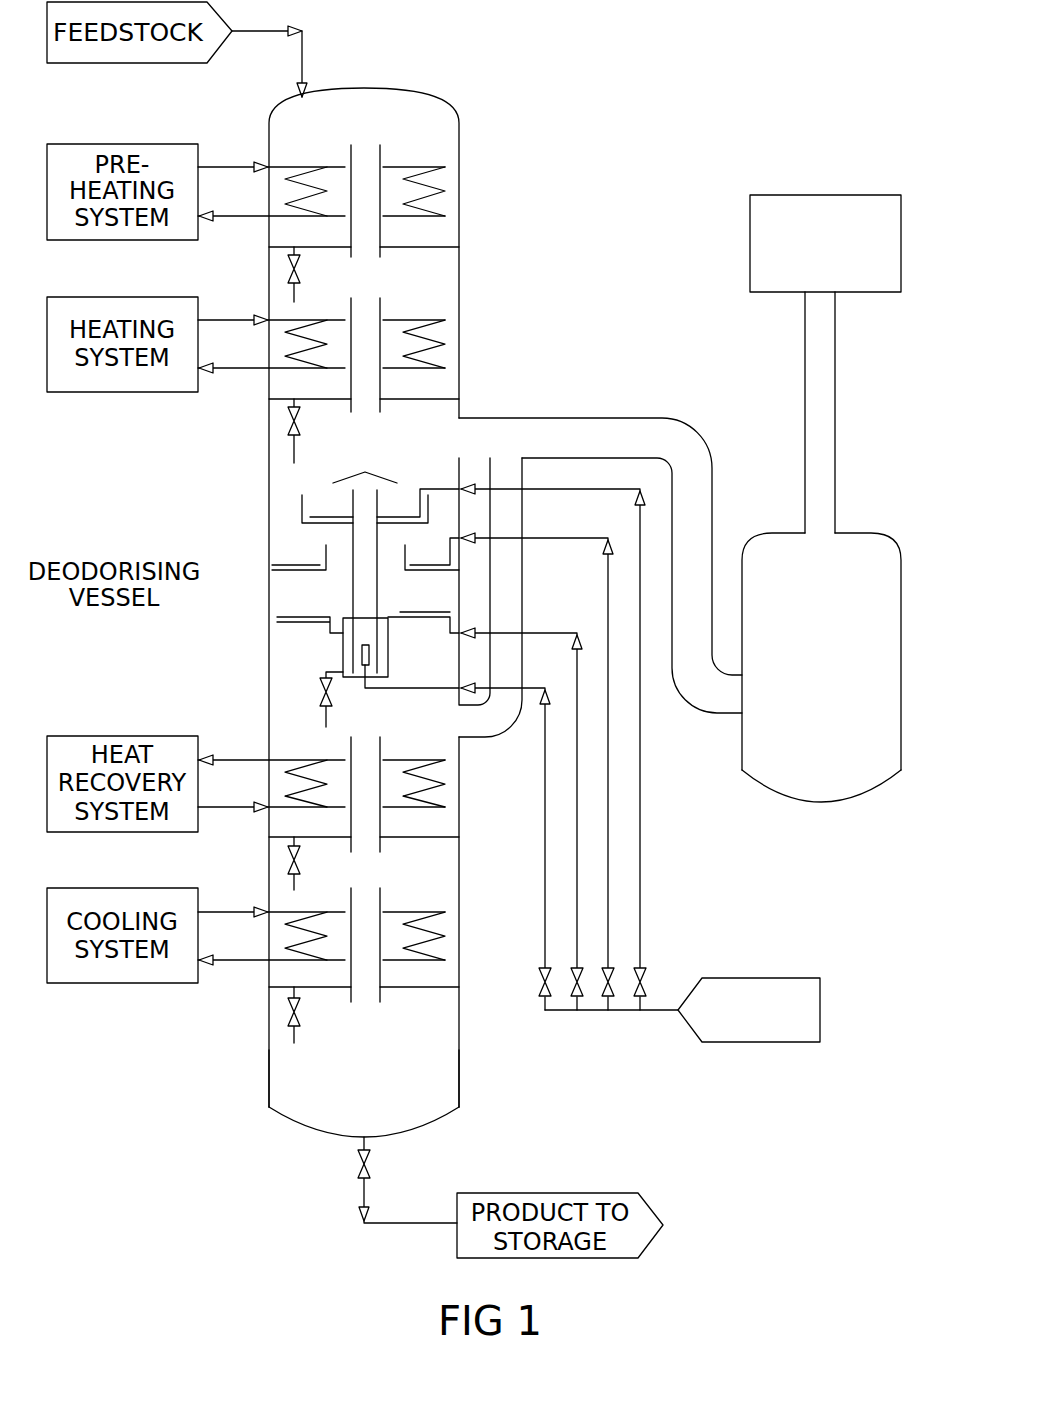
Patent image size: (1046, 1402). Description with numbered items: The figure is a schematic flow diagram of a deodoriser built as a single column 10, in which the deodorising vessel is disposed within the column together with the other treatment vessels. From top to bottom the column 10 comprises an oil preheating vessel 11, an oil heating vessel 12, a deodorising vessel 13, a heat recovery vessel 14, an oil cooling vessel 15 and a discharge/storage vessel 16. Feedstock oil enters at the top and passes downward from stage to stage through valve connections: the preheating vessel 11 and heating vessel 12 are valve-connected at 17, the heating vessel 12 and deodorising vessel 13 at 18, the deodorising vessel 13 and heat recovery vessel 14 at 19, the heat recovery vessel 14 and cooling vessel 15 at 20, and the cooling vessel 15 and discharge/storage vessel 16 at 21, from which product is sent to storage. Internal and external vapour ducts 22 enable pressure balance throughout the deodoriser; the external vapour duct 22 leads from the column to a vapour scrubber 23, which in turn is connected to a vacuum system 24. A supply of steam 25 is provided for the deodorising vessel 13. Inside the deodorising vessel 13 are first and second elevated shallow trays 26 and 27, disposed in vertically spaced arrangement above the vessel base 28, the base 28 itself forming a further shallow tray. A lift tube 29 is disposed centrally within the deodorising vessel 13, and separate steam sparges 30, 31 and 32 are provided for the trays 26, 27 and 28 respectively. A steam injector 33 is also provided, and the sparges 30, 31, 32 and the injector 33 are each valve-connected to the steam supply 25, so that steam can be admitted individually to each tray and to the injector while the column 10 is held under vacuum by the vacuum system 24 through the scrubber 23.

The column 10 is at (430, 97).
The oil preheating vessel 11 is at (447, 207).
The oil heating vessel 12 is at (447, 359).
The deodorising vessel 13 is at (349, 581).
The heat recovery vessel 14 is at (447, 798).
The oil cooling vessel 15 is at (447, 950).
The discharge/storage vessel 16 is at (447, 1072).
The valve connection 17 is at (287, 268).
The valve connection 18 is at (288, 420).
The valve connection 19 is at (318, 690).
The valve connection 20 is at (288, 860).
The valve connection 21 is at (288, 1012).
The vapour ducts 22 is at (383, 147).
The vapour scrubber 23 is at (767, 535).
The vacuum system 24 is at (750, 240).
The steam supply 25 is at (790, 978).
The first elevated shallow tray 26 is at (300, 513).
The second elevated shallow tray 27 is at (275, 568).
The vessel base 28 is at (277, 619).
The central tube 29 is at (378, 598).
The steam sparge 30 is at (642, 848).
The steam sparge 31 is at (610, 882).
The steam sparge 32 is at (575, 848).
The steam injector 33 is at (543, 882).